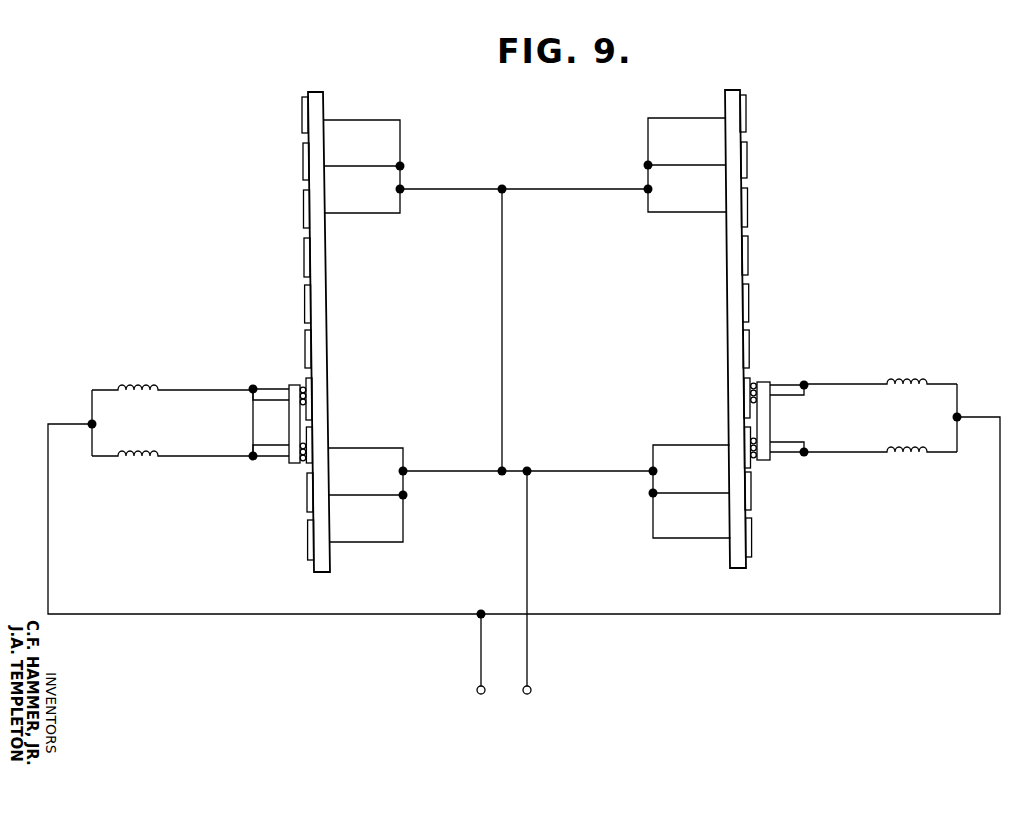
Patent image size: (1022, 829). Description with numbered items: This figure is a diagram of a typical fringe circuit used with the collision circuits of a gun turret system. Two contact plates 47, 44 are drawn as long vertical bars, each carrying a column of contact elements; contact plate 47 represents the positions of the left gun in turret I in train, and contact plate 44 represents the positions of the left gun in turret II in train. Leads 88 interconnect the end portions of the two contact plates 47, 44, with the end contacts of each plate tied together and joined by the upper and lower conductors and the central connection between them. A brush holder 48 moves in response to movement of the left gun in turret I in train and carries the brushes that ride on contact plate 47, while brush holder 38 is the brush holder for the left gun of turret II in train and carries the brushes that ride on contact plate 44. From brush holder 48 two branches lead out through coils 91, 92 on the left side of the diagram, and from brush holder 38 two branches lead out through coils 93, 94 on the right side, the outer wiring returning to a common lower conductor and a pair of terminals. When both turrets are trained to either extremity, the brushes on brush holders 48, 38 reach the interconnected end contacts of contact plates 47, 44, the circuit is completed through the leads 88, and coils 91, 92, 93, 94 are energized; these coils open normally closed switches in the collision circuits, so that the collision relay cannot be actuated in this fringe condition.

The contact plate 47 is at (318, 92).
The contact plate 44 is at (733, 90).
The leads 88 is at (553, 173).
The brush holder 48 is at (293, 385).
The brush holder 38 is at (765, 382).
The coil 91 is at (139, 386).
The coil 92 is at (139, 451).
The coil 93 is at (910, 383).
The coil 94 is at (900, 447).